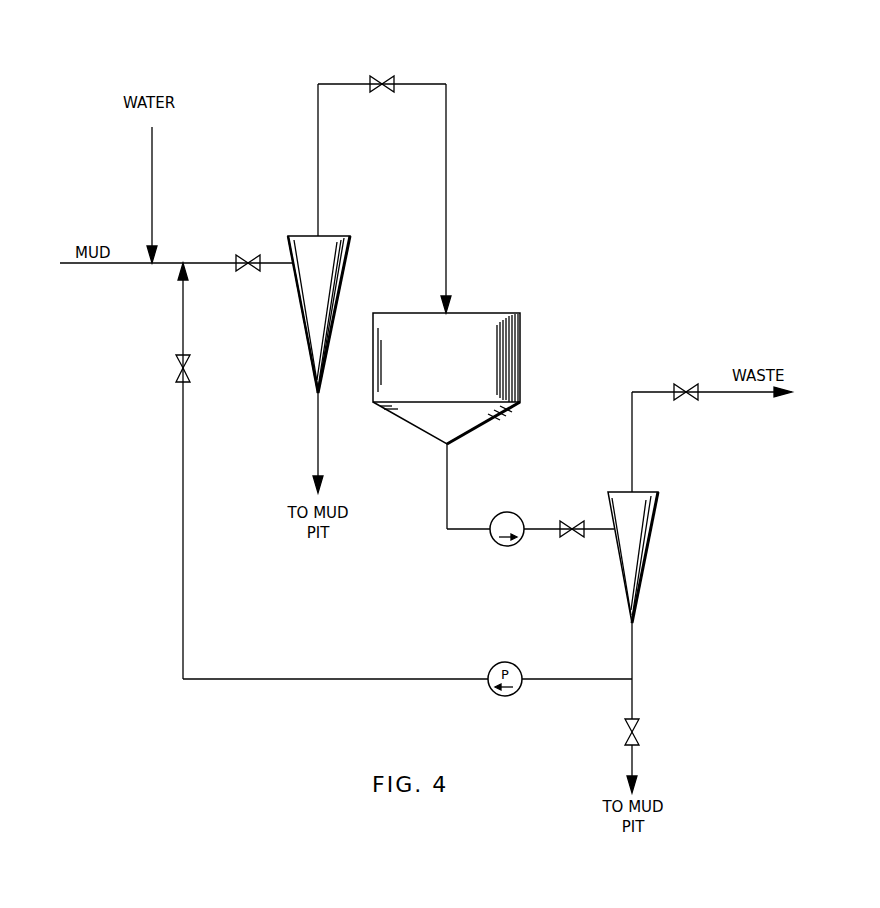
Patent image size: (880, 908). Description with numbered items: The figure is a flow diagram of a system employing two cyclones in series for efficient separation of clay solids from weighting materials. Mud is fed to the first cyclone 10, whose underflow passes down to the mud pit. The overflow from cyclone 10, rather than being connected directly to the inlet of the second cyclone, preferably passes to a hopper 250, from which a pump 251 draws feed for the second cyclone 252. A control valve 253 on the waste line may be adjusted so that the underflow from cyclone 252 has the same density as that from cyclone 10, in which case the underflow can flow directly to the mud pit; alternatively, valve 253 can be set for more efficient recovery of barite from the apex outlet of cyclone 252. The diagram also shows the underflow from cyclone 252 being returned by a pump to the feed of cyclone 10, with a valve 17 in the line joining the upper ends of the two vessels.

The valve 17 is at (372, 78).
The cyclone 10 is at (349, 252).
The hopper 250 is at (521, 375).
The pump 251 is at (504, 512).
The second cyclone 252 is at (656, 512).
The control valve 253 is at (694, 385).